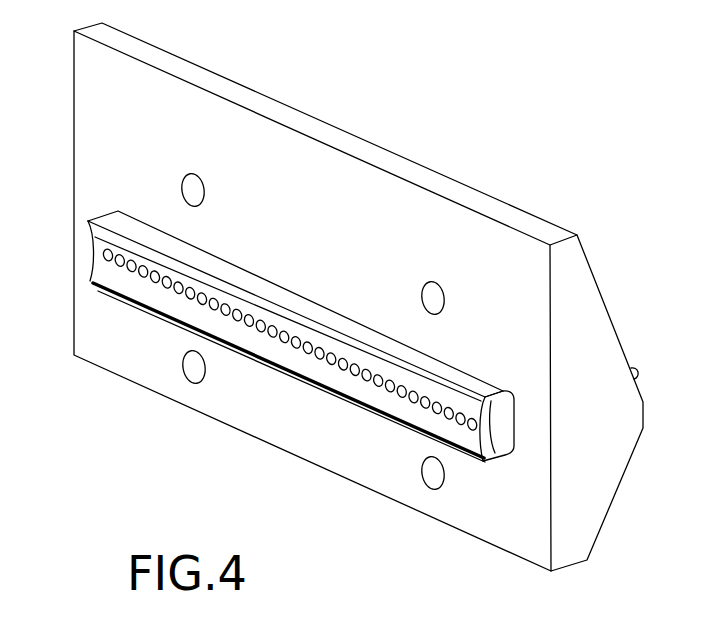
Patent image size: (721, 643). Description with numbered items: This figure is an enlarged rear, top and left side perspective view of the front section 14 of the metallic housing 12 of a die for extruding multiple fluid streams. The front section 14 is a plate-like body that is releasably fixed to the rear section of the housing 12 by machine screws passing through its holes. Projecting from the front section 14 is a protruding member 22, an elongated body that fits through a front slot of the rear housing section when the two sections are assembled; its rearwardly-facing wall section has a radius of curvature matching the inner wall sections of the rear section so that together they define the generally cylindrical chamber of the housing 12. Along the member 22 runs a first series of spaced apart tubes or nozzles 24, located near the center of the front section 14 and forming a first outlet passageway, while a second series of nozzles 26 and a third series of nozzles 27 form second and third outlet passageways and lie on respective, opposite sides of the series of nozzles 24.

The housing 12 is at (357, 300).
The front section 14 is at (582, 277).
The protruding member 22 is at (410, 415).
The nozzles 24 is at (286, 340).
The nozzles 26 is at (471, 425).
The nozzles 27 is at (118, 268).